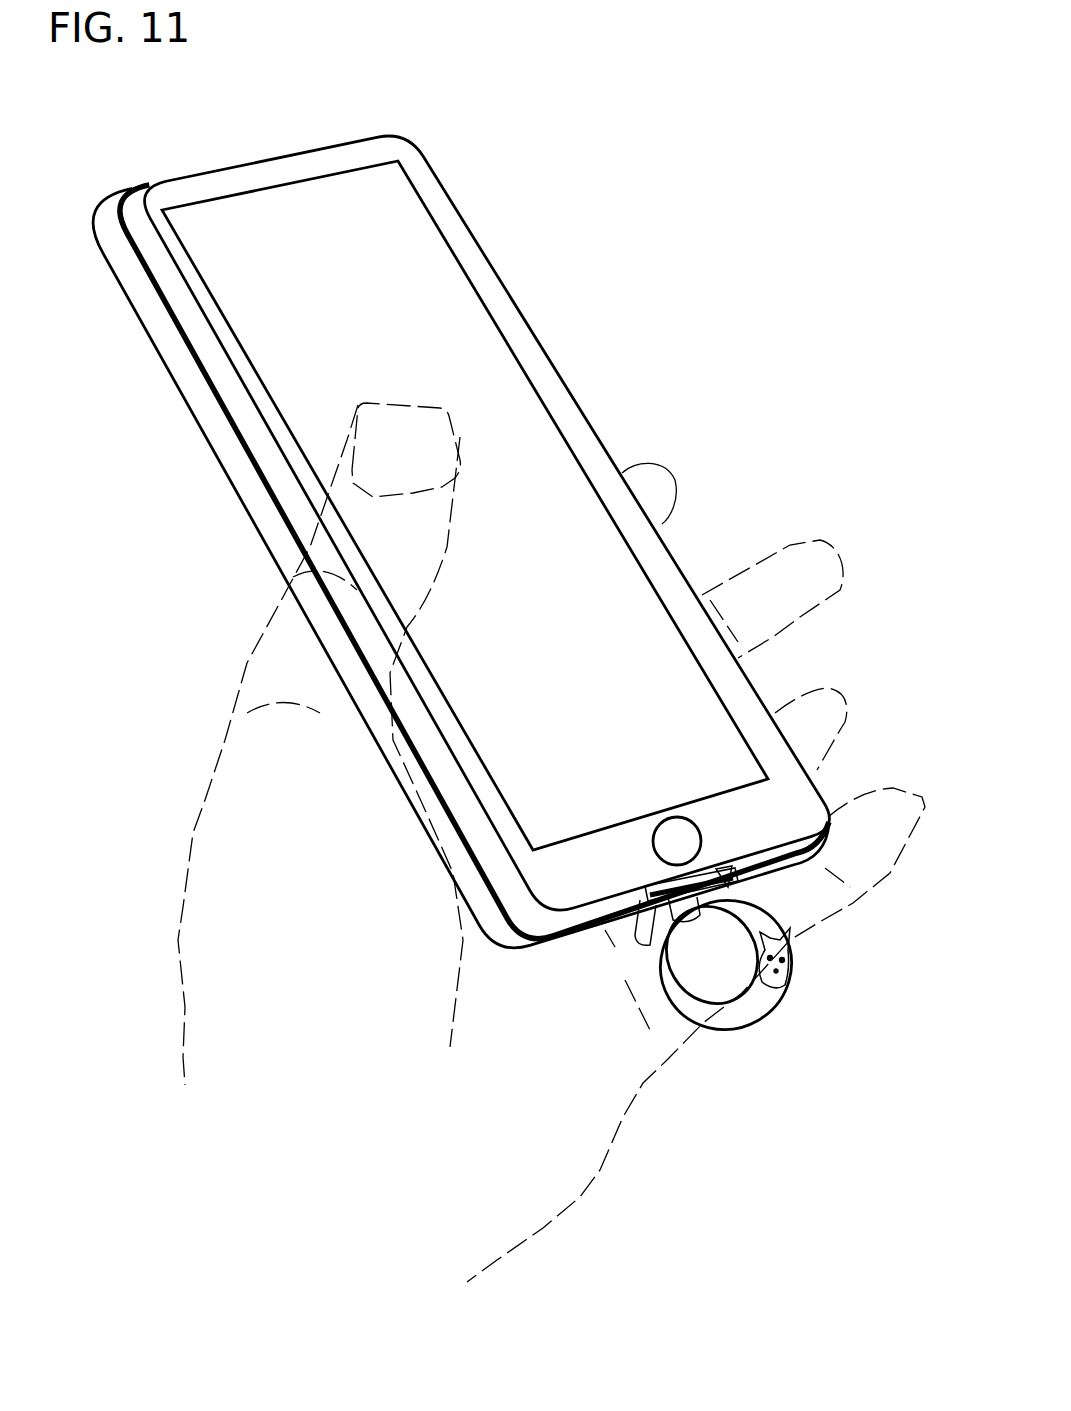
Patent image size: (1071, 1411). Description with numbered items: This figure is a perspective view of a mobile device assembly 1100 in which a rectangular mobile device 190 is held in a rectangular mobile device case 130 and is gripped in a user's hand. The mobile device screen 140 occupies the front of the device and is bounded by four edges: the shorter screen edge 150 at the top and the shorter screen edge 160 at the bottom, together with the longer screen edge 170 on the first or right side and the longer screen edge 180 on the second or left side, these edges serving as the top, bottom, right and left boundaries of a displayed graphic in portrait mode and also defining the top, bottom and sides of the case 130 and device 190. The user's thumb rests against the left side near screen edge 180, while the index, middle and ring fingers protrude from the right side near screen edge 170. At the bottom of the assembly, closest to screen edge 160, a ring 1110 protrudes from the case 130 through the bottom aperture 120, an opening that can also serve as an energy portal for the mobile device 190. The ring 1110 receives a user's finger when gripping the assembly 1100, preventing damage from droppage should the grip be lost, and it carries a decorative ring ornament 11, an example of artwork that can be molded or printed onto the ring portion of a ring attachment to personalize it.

The mobile device assembly 1100 is at (490, 178).
The mobile device case 130 is at (165, 336).
The screen edge 180 is at (275, 412).
The screen edge 150 is at (265, 185).
The screen edge 170 is at (504, 328).
The mobile device screen 140 is at (370, 292).
The screen edge 160 is at (570, 842).
The bottom aperture 120 is at (735, 882).
The ring 1110 is at (760, 1013).
The decorative ring ornament 11 is at (783, 983).
The mobile device 190 is at (663, 547).